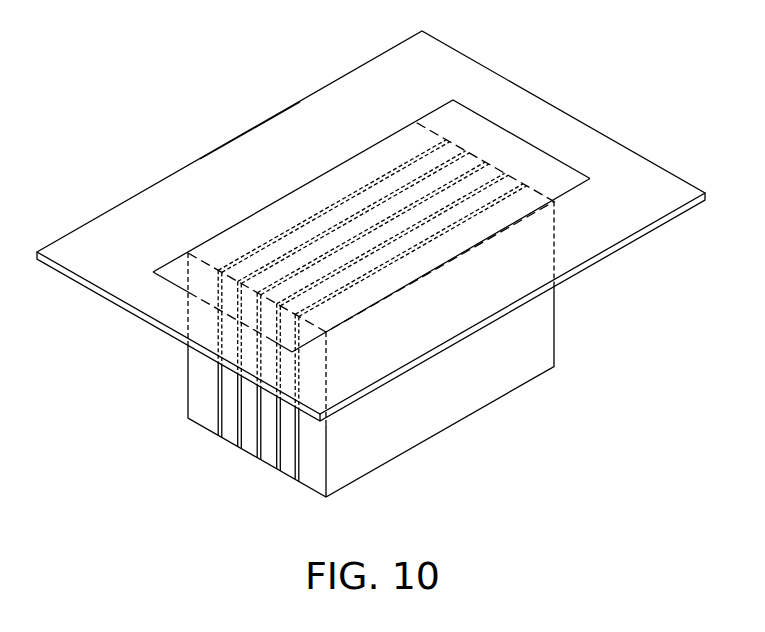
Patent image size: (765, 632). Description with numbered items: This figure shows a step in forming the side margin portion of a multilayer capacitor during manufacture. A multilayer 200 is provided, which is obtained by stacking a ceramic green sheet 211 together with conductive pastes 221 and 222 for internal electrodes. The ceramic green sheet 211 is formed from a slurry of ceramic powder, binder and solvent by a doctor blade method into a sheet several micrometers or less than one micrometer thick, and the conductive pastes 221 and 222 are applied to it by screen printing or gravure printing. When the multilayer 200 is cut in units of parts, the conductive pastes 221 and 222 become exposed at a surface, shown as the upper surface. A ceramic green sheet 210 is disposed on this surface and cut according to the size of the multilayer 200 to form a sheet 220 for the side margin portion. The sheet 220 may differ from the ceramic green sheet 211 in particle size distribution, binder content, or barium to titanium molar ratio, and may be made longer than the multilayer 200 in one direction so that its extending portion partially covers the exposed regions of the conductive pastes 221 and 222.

The multilayer 200 is at (522, 398).
The ceramic green sheet 210 is at (555, 109).
The ceramic green sheet 211 is at (248, 132).
The sheet for side margin portion 220 is at (468, 118).
The conductive paste for internal electrode 221 is at (332, 202).
The conductive paste for internal electrode 222 is at (382, 180).